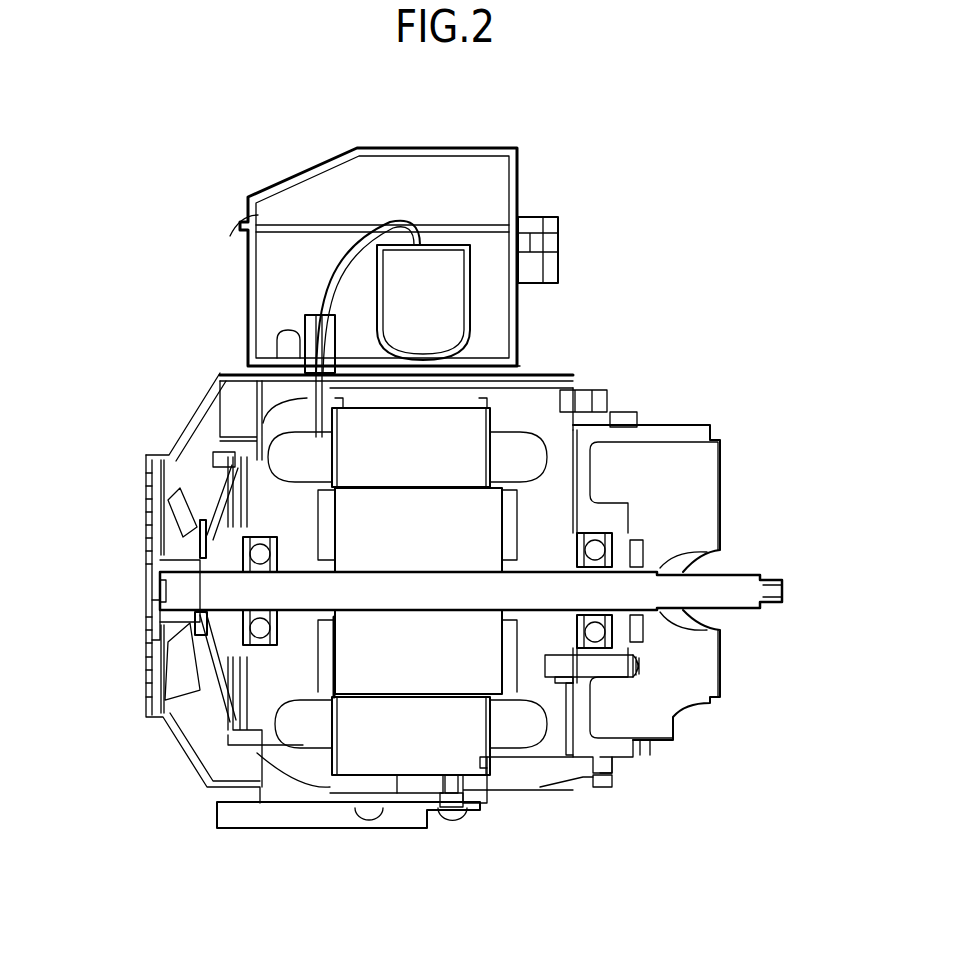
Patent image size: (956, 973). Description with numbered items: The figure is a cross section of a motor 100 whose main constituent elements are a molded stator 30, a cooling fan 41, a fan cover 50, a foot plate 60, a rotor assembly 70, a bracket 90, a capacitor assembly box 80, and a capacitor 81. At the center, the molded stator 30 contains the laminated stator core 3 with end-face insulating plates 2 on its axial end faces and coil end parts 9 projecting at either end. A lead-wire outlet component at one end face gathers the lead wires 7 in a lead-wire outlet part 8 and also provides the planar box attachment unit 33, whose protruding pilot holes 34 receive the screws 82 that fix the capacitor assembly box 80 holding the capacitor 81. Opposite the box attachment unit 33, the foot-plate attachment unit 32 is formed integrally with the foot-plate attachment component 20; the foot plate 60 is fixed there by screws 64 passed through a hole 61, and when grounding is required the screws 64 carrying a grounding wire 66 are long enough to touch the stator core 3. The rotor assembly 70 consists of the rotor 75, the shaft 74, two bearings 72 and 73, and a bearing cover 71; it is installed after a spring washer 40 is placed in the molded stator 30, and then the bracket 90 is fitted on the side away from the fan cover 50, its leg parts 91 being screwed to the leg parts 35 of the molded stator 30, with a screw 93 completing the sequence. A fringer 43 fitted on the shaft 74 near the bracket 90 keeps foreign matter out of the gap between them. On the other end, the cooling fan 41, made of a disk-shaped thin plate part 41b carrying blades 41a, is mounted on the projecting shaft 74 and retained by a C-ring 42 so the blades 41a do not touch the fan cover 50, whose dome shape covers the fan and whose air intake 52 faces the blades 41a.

The motor 100 is at (742, 163).
The end-face insulating plate 2 is at (333, 768).
The stator core 3 is at (478, 762).
The lead wire 7 is at (430, 233).
The lead-wire outlet part 8 is at (310, 370).
The coil end part 9 is at (297, 452).
The foot-plate attachment component 20 is at (468, 783).
The molded stator 30 is at (333, 690).
The foot-plate attachment unit 32 is at (408, 790).
The capacitor-assembly-box attachment unit 33 is at (360, 385).
The pilot hole 34 is at (352, 380).
The leg part 35 is at (583, 787).
The spring washer 40 is at (177, 458).
The cooling fan 41 is at (178, 460).
The blade 41a is at (182, 485).
The thin plate part 41b is at (190, 545).
The C-ring 42 is at (140, 560).
The fringer 43 is at (647, 565).
The fan cover 50 is at (142, 710).
The air intake 52 is at (142, 630).
The foot plate 60 is at (262, 828).
The hole 61 is at (453, 808).
The screw 64 is at (373, 818).
The grounding wire 66 is at (473, 808).
The rotor assembly 70 is at (507, 667).
The bearing cover 71 is at (570, 680).
The bearing 72 is at (607, 537).
The bearing 73 is at (245, 550).
The shaft 74 is at (770, 573).
The rotor 75 is at (352, 665).
The capacitor assembly box 80 is at (245, 224).
The capacitor 81 is at (470, 295).
The screw 82 is at (343, 348).
The bracket 90 is at (722, 455).
The leg part 91 is at (607, 765).
The screw 93 is at (640, 655).